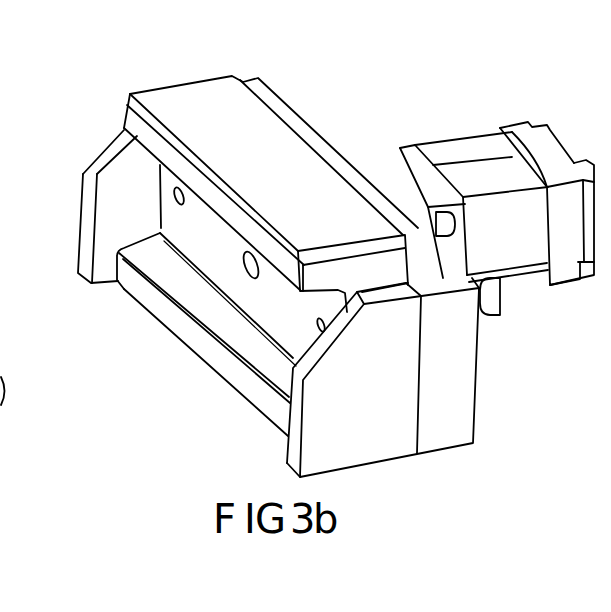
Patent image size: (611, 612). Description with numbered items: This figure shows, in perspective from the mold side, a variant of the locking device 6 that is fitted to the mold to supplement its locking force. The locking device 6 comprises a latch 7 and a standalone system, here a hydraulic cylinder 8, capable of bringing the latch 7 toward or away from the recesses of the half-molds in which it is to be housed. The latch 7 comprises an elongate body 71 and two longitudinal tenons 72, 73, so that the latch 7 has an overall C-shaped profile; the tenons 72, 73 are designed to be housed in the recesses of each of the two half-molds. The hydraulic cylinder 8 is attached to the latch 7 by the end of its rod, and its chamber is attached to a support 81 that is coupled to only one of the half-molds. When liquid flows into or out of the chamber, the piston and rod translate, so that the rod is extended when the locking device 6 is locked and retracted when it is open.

The locking device 6 is at (329, 95).
The latch 7 is at (95, 77).
The hydraulic cylinder 8 is at (440, 146).
The elongate body 71 is at (283, 317).
The longitudinal tenon 72 is at (192, 327).
The longitudinal tenon 73 is at (220, 203).
The support 81 is at (119, 198).